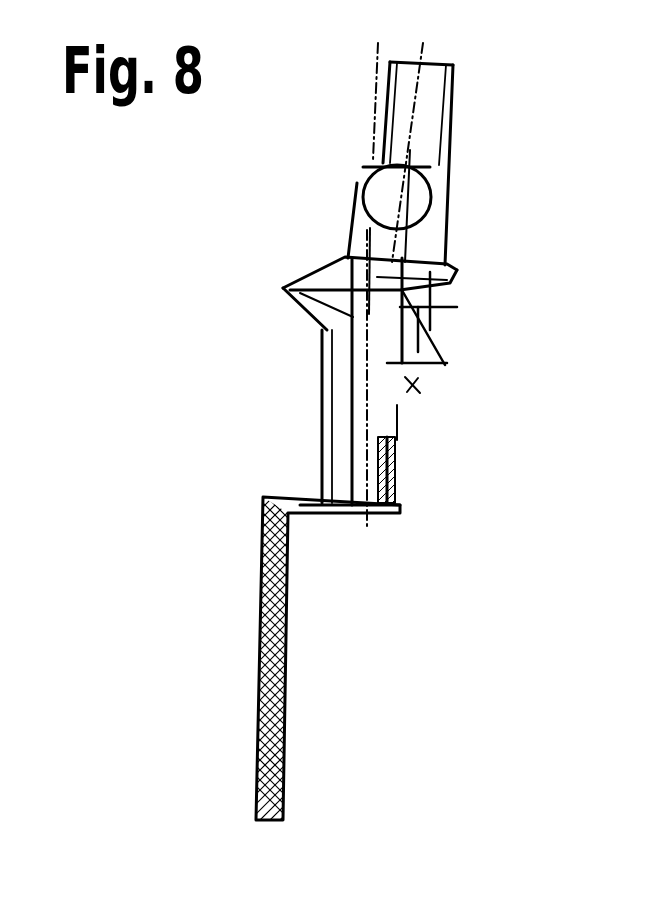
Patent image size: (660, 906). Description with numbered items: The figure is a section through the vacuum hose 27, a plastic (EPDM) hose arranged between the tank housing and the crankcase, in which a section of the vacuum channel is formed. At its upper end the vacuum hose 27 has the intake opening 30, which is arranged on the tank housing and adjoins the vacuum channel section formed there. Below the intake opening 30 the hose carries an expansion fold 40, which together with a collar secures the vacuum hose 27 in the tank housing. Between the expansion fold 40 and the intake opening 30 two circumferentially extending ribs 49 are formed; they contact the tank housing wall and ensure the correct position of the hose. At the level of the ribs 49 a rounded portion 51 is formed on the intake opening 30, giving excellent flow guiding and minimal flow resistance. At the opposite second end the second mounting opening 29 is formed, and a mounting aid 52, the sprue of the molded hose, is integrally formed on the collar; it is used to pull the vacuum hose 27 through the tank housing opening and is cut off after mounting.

The vacuum hose 27 is at (506, 134).
The expansion fold 40 is at (283, 290).
The ribs 49 is at (430, 312).
The rounded portion 51 is at (427, 310).
The intake opening 30 is at (397, 407).
The second mounting opening 29 is at (358, 507).
The mounting aid 52 is at (277, 702).